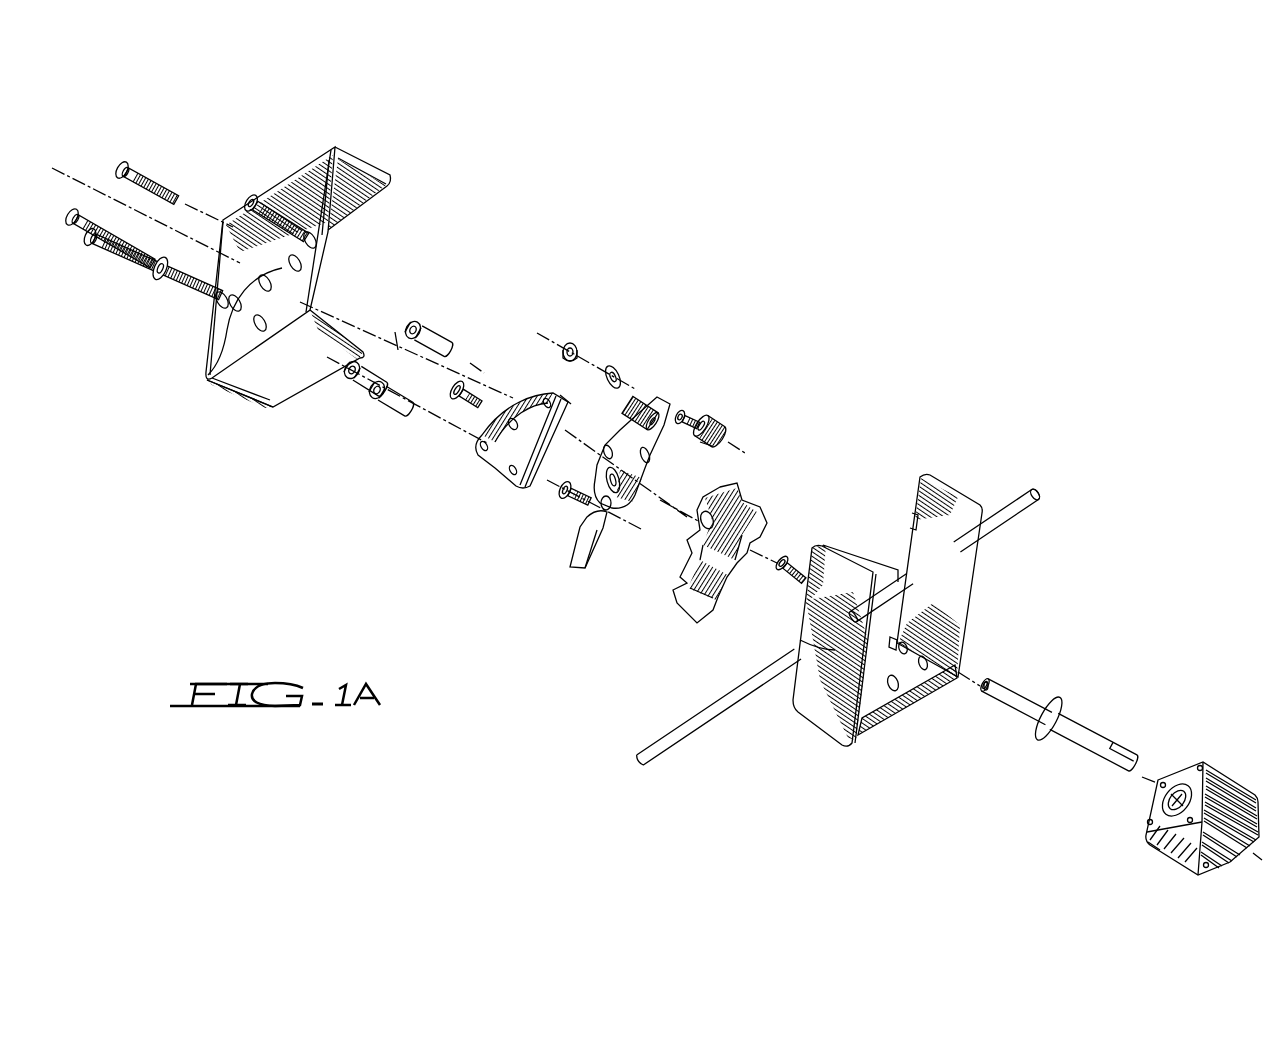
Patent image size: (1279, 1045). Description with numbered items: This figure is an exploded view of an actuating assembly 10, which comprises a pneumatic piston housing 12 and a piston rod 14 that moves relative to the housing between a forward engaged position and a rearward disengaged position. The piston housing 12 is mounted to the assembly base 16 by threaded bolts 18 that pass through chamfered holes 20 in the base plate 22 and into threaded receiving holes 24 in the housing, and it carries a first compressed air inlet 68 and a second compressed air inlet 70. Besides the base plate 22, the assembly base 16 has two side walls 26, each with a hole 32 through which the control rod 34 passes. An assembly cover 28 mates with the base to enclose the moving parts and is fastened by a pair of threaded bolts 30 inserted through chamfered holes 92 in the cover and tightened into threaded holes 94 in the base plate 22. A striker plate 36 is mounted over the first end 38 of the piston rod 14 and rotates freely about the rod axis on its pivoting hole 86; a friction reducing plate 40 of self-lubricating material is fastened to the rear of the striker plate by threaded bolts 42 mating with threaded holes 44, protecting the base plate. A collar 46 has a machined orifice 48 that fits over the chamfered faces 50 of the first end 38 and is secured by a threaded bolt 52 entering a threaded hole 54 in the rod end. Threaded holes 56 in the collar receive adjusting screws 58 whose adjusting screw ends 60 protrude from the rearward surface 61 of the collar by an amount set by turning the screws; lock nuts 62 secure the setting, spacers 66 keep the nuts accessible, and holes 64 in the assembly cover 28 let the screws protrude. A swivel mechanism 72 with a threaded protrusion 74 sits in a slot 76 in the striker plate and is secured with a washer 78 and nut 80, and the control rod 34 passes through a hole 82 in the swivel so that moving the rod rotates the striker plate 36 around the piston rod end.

The actuating assembly 10 is at (895, 345).
The piston housing 12 is at (1211, 818).
The piston rod 14 is at (1102, 738).
The assembly base 16 is at (849, 605).
The threaded bolts 18 is at (785, 560).
The chamfered holes 20 is at (922, 672).
The base plate 22 is at (890, 565).
The threaded receiving holes 24 is at (1178, 777).
The side walls 26 is at (962, 600).
The assembly cover 28 is at (298, 178).
The threaded bolts 30 is at (225, 262).
The holes 32 is at (972, 550).
The control rod 34 is at (1028, 505).
The striker plate 36 is at (662, 408).
The first end 38 is at (1043, 712).
The friction reducing plate 40 is at (722, 585).
The threaded bolts 42 is at (565, 500).
The threaded holes 44 is at (730, 490).
The collar 46 is at (489, 424).
The machined orifice 48 is at (515, 405).
The chamfered faces 50 is at (992, 681).
The threaded bolt 52 is at (452, 400).
The threaded hole 54 is at (980, 700).
The threaded holes 56 is at (510, 474).
The adjusting screws 58 is at (80, 262).
The adjusting screw ends 60 is at (190, 195).
The rearward surface 61 is at (572, 407).
The lock nuts 62 is at (413, 322).
The holes 64 is at (232, 300).
The spacers 66 is at (405, 398).
The first compressed air inlet 68 is at (1206, 868).
The second compressed air inlet 70 is at (1195, 853).
The swivel mechanism 72 is at (703, 446).
The threaded protrusion 74 is at (700, 412).
The slot 76 is at (643, 398).
The washer 78 is at (613, 365).
The nut 80 is at (572, 343).
The hole 82 is at (716, 418).
The pivoting hole 86 is at (608, 512).
The chamfered holes 92 is at (333, 224).
The threaded holes 94 is at (812, 642).